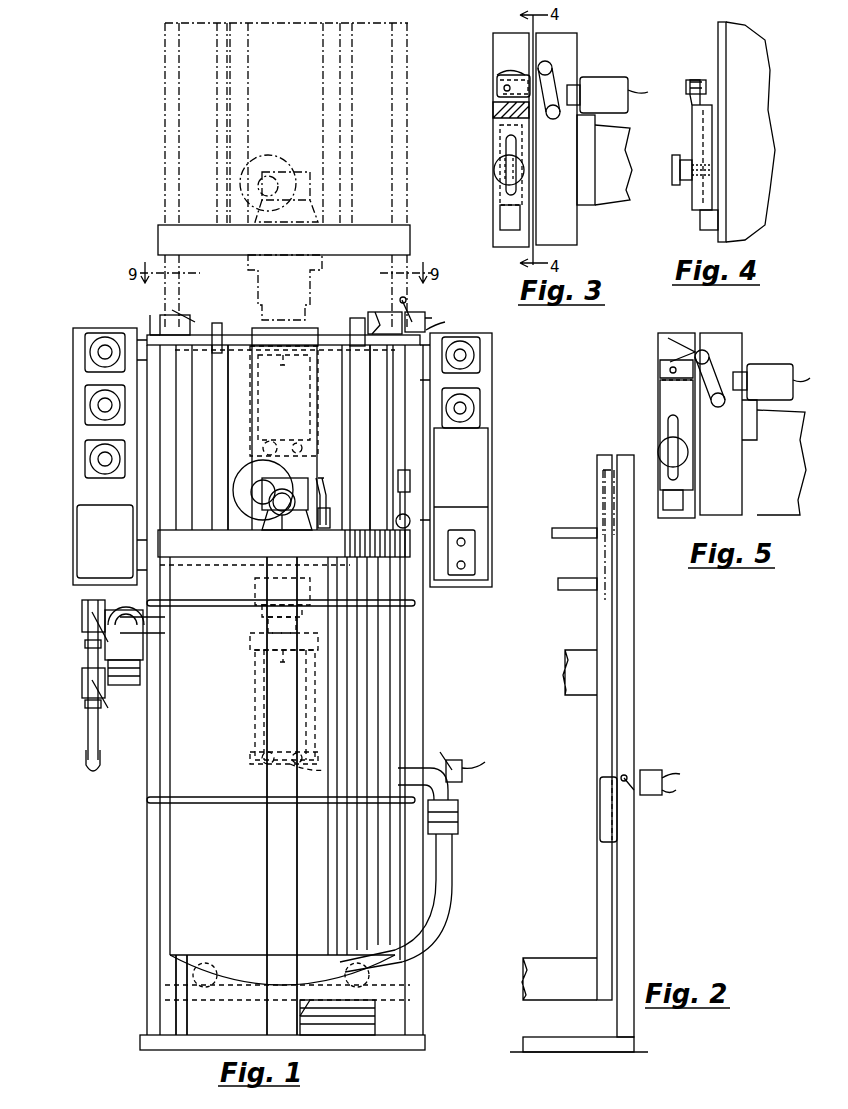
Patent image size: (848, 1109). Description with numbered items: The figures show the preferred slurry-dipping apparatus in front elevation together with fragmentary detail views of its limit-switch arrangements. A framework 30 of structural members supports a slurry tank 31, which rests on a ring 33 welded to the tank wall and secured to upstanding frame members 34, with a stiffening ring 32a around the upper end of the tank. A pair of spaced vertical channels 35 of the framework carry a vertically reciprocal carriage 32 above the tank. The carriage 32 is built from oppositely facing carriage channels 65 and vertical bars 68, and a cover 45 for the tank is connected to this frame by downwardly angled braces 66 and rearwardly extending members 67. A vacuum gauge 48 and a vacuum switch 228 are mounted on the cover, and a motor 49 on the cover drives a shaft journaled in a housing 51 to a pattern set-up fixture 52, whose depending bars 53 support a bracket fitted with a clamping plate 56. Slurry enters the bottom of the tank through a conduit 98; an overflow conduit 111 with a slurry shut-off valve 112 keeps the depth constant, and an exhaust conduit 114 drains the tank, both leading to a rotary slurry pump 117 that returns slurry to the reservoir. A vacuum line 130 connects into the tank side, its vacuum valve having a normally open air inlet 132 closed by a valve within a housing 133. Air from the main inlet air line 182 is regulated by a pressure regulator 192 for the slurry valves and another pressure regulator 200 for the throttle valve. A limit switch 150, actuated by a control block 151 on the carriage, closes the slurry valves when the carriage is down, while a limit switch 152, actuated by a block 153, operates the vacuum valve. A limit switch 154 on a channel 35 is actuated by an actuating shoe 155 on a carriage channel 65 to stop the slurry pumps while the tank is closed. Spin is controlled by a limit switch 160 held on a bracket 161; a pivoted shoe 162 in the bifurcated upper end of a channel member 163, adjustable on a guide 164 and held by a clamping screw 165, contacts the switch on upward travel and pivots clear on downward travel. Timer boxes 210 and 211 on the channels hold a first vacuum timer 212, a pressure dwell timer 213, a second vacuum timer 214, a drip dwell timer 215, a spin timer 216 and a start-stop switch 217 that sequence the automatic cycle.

In FIG. 1, the framework 30 is at (147, 898).
In FIG. 1, the slurry tank 31 is at (172, 932).
In FIG. 1, the carriage 32 is at (160, 108).
In FIG. 1, the stiffening ring 32a is at (415, 603).
In FIG. 1, the ring 33 is at (200, 797).
In FIG. 1, the upstanding frame members 34 is at (267, 884).
In FIG. 1, the vertical channels 35 is at (430, 690).
In FIG. 2, the vertical channels 35 is at (634, 668).
In FIG. 3, the vertical channels 35 is at (565, 50).
In FIG. 5, the vertical channels 35 is at (732, 338).
In FIG. 1, the cover 45 is at (158, 240).
In FIG. 1, the vacuum gauge 48 is at (290, 522).
In FIG. 1, the motor 49 is at (235, 478).
In FIG. 1, the housing 51 is at (255, 590).
In FIG. 1, the pattern set-up fixture 52 is at (240, 648).
In FIG. 1, the depending bars 53 is at (255, 712).
In FIG. 1, the clamping plate 56 is at (322, 773).
In FIG. 1, the carriage channels 65 is at (150, 1018).
In FIG. 2, the carriage channels 65 is at (597, 738).
In FIG. 3, the carriage channels 65 is at (493, 50).
In FIG. 4, the carriage channels 65 is at (755, 120).
In FIG. 5, the carriage channels 65 is at (685, 335).
In FIG. 1, the braces 66 is at (225, 452).
In FIG. 1, the rearwardly extending members 67 is at (140, 530).
In FIG. 1, the vertical bars 68 is at (240, 415).
In FIG. 1, the conduit 98 is at (212, 960).
In FIG. 1, the overflow conduit 111 is at (452, 900).
In FIG. 1, the slurry shut-off valve 112 is at (458, 830).
In FIG. 1, the exhaust conduit 114 is at (356, 962).
In FIG. 1, the rotary slurry pump 117 is at (355, 1035).
In FIG. 1, the vacuum line 130 is at (145, 636).
In FIG. 1, the air inlet 132 is at (125, 685).
In FIG. 1, the valve housing 133 is at (105, 645).
In FIG. 1, the limit switch 150 is at (160, 318).
In FIG. 1, the control block 151 is at (215, 340).
In FIG. 1, the limit switch 152 is at (390, 312).
In FIG. 1, the block 153 is at (350, 322).
In FIG. 1, the limit switch 154 is at (470, 766).
In FIG. 2, the limit switch 154 is at (668, 760).
In FIG. 2, the actuating shoe 155 is at (618, 525).
In FIG. 1, the limit switch 160 is at (428, 300).
In FIG. 3, the limit switch 160 is at (612, 70).
In FIG. 5, the limit switch 160 is at (770, 400).
In FIG. 1, the bracket 161 is at (456, 319).
In FIG. 3, the bracket 161 is at (604, 173).
In FIG. 1, the shoe 162 is at (410, 478).
In FIG. 3, the shoe 162 is at (497, 86).
In FIG. 4, the shoe 162 is at (692, 80).
In FIG. 5, the shoe 162 is at (662, 356).
In FIG. 1, the channel member 163 is at (410, 500).
In FIG. 3, the channel member 163 is at (500, 200).
In FIG. 4, the channel member 163 is at (692, 128).
In FIG. 5, the channel member 163 is at (660, 390).
In FIG. 3, the guide 164 is at (500, 222).
In FIG. 4, the guide 164 is at (705, 218).
In FIG. 5, the guide 164 is at (675, 510).
In FIG. 1, the clamping screw 165 is at (410, 521).
In FIG. 3, the clamping screw 165 is at (495, 168).
In FIG. 4, the clamping screw 165 is at (672, 172).
In FIG. 5, the clamping screw 165 is at (660, 448).
In FIG. 1, the main inlet air line 182 is at (86, 748).
In FIG. 1, the pressure regulator 192 is at (82, 680).
In FIG. 1, the pressure regulator 200 is at (82, 618).
In FIG. 1, the timer box 210 is at (77, 494).
In FIG. 1, the timer box 211 is at (492, 482).
In FIG. 1, the first vacuum timer 212 is at (85, 352).
In FIG. 1, the pressure dwell timer 213 is at (85, 405).
In FIG. 1, the second vacuum timer 214 is at (85, 460).
In FIG. 1, the drip dwell timer 215 is at (480, 360).
In FIG. 1, the spin timer 216 is at (480, 410).
In FIG. 1, the start-stop switch 217 is at (475, 552).
In FIG. 1, the vacuum switch 228 is at (330, 500).